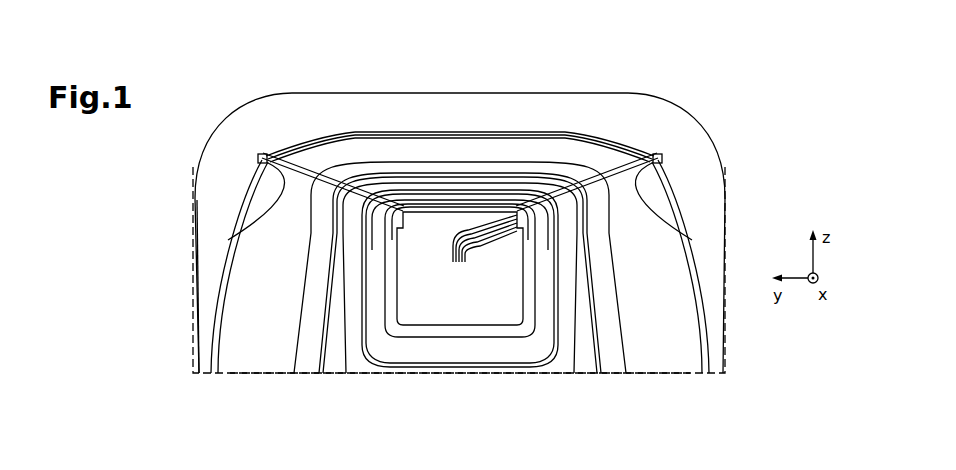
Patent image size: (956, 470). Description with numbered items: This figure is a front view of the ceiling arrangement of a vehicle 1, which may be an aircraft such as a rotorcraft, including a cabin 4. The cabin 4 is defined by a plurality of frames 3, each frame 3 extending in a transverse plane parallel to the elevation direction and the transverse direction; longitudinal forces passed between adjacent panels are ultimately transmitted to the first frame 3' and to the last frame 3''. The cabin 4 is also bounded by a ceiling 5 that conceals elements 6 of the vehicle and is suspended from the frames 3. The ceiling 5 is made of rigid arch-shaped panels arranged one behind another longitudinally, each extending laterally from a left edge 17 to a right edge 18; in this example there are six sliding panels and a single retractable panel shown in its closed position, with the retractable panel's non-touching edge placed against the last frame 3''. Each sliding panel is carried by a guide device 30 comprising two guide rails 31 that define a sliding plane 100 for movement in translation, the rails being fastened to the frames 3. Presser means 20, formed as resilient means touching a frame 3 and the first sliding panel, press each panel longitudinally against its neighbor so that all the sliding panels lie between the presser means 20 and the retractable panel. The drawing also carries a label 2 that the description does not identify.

The sliding plane 100 is at (222, 95).
The vehicle 1 is at (770, 152).
The working area boundary 2 is at (186, 340).
The frame 3 is at (380, 283).
The first frame 3' is at (465, 314).
The last frame 3'' is at (165, 306).
The cabin 4 is at (298, 378).
The ceiling 5 is at (638, 203).
The elements of the vehicle 6 is at (573, 72).
The left edge 17 is at (672, 163).
The right edge 18 is at (262, 193).
The presser means 20 is at (455, 210).
The guide device 30 is at (343, 207).
The guide rail 31 is at (660, 188).